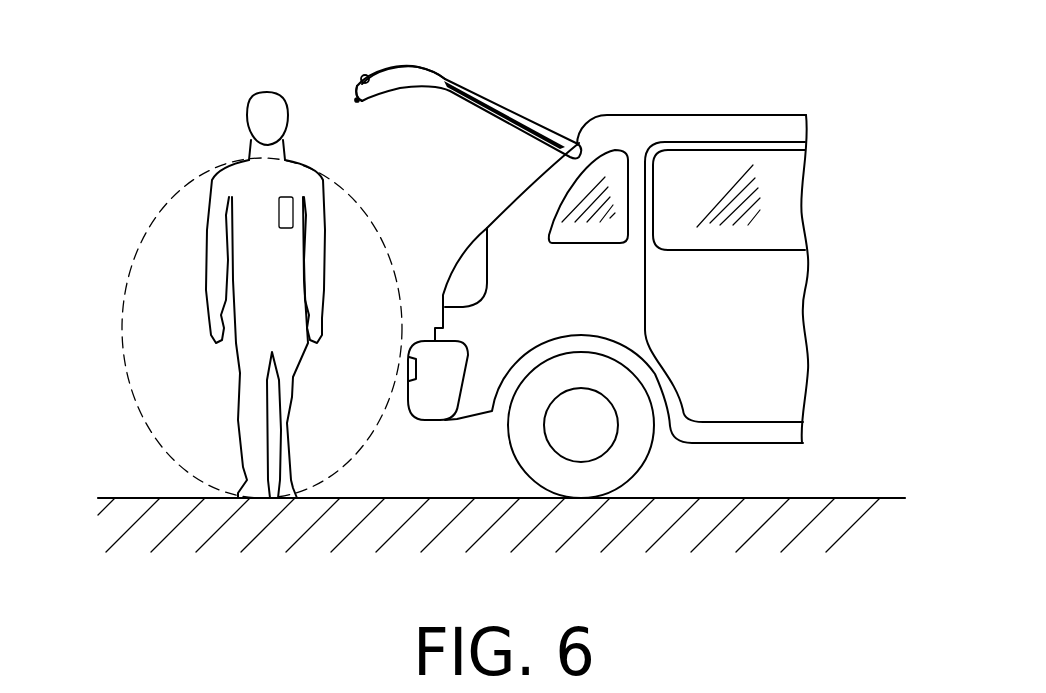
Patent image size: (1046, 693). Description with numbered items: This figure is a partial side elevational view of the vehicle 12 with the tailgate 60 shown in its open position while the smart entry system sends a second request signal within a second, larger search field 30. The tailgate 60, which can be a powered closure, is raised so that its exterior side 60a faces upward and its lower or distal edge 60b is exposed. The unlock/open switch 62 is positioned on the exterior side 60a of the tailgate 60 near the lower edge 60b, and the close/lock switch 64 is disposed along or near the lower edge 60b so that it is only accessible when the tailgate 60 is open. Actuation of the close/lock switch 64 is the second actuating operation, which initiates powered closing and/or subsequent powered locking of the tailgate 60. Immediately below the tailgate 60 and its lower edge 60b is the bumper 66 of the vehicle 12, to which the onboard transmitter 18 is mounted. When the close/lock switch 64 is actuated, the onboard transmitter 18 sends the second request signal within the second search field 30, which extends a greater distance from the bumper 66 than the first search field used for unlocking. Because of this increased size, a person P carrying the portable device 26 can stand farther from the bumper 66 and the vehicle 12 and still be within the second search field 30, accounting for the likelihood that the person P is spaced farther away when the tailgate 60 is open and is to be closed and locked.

The vehicle 12 is at (840, 135).
The onboard transmitter 18 is at (410, 368).
The portable device 26 is at (287, 203).
The second search field 30 is at (122, 298).
The tailgate 60 is at (478, 95).
The exterior side of the tailgate 60a is at (421, 67).
The lower edge of the tailgate 60b is at (355, 87).
The unlock/open switch 62 is at (365, 75).
The close/lock switch 64 is at (358, 102).
The bumper 66 is at (438, 407).
The person P is at (238, 158).